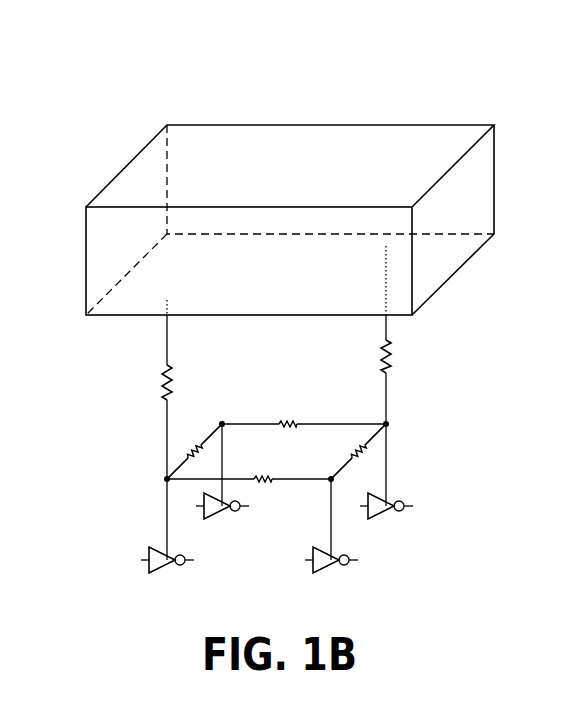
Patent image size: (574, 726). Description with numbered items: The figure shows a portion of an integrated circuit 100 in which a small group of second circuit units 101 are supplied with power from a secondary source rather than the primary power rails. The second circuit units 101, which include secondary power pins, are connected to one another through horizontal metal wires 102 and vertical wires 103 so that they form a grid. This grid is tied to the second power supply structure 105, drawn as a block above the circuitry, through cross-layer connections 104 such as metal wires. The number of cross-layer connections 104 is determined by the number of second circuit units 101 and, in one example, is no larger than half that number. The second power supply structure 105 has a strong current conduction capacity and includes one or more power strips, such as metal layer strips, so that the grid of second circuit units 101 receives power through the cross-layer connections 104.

The integrated circuit 100 is at (146, 83).
The second circuit units 101 is at (150, 545).
The horizontal metal wires 102 is at (285, 420).
The vertical wires 103 is at (387, 463).
The cross-layer connections 104 is at (165, 410).
The second power supply structure 105 is at (128, 180).